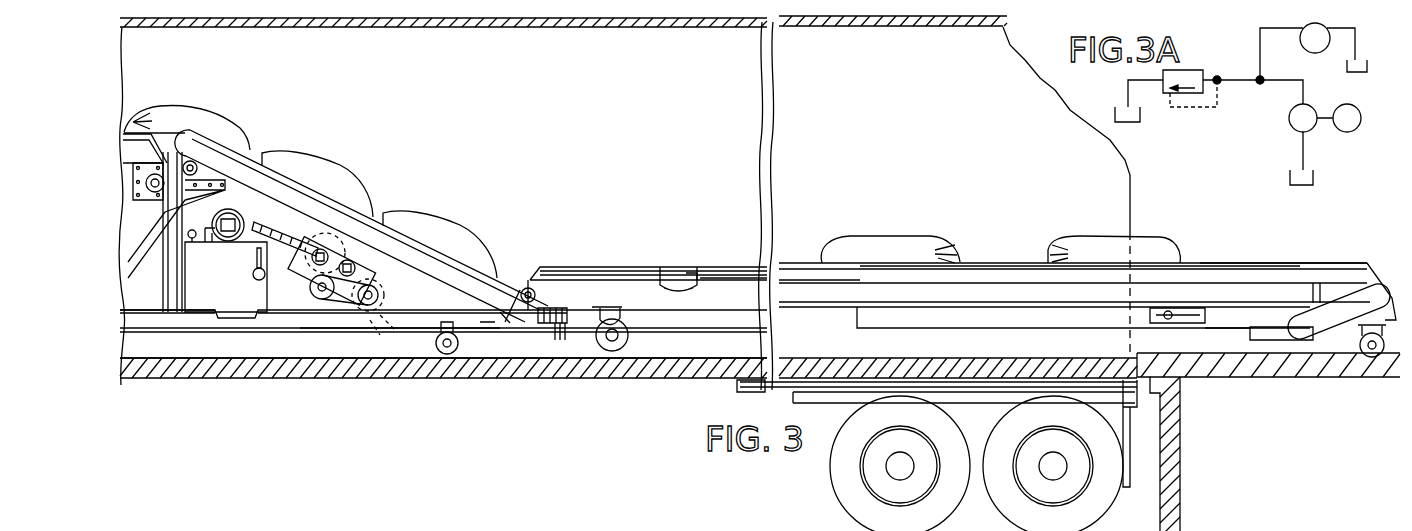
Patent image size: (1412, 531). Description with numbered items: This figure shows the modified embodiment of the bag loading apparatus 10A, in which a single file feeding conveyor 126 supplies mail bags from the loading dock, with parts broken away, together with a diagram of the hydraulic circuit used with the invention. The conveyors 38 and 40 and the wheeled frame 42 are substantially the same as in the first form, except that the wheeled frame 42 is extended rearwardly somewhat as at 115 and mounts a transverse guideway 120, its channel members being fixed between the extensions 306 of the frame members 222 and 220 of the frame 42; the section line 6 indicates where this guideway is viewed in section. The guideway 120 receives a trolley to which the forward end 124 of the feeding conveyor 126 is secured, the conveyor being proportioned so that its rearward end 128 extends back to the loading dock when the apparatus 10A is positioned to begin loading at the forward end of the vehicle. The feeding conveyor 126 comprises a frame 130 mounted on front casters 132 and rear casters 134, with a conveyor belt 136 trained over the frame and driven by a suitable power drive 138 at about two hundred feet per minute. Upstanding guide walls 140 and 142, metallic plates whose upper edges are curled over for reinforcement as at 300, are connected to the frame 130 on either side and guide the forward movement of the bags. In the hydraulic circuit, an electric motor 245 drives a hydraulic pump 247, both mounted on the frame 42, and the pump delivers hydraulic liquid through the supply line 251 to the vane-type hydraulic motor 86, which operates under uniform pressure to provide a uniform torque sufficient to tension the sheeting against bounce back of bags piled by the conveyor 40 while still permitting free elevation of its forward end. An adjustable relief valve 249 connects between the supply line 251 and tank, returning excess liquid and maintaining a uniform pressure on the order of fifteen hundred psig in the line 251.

In FIG. 3, the apparatus 10A is at (515, 167).
In FIG. 3, the conveyor 40 is at (135, 104).
In FIG. 3, the conveyor 38 is at (400, 184).
In FIG. 3, the section line 6 is at (530, 417).
In FIG. 3, the forward end 124 is at (558, 293).
In FIG. 3, the conveyor belt 136 is at (669, 282).
In FIG. 3, the upstanding guide wall 142 is at (688, 277).
In FIG. 3, the upstanding guide wall 140 is at (728, 278).
In FIG. 3, the guideway 120 is at (575, 311).
In FIG. 3, the front casters 132 is at (618, 340).
In FIG. 3, the rearward extension 115 is at (505, 323).
In FIG. 3, the extensions 306 is at (523, 322).
In FIG. 3, the frame member 222 is at (245, 325).
In FIG. 3, the wheeled frame 42 is at (312, 340).
In FIG. 3, the frame member 220 is at (407, 320).
In FIG. 3, the frame 130 is at (803, 293).
In FIG. 3, the feeding conveyor 126 is at (1013, 268).
In FIG. 3, the curled-over upper edge 300 is at (1250, 263).
In FIG. 3, the rearward end 128 is at (1338, 285).
In FIG. 3, the rear casters 134 is at (1369, 360).
In FIG. 3, the power drive 138 is at (1231, 338).
In FIG. 3A, the relief valve 249 is at (1188, 71).
In FIG. 3A, the hydraulic liquid supply line 251 is at (1272, 83).
In FIG. 3A, the hydraulic motor 86 is at (1318, 35).
In FIG. 3A, the hydraulic pump 247 is at (1297, 128).
In FIG. 3A, the electric motor 245 is at (1347, 130).